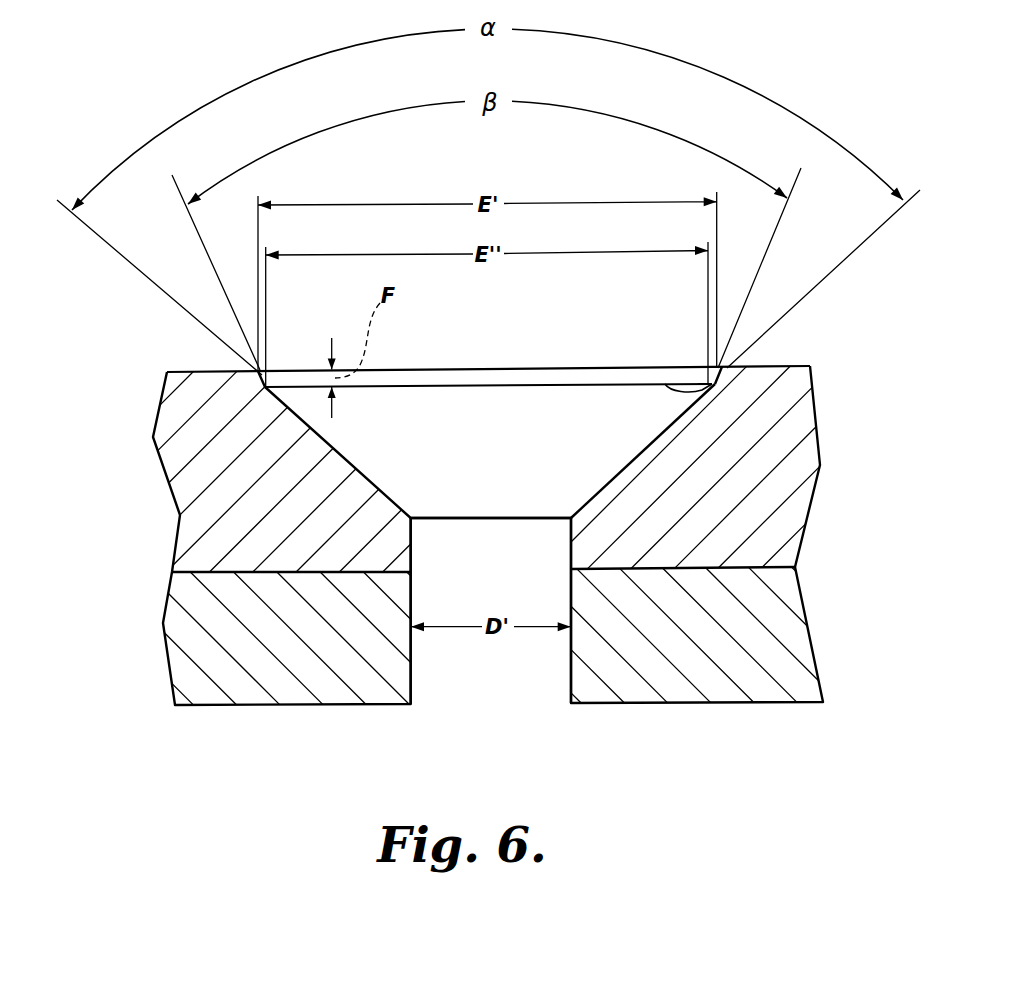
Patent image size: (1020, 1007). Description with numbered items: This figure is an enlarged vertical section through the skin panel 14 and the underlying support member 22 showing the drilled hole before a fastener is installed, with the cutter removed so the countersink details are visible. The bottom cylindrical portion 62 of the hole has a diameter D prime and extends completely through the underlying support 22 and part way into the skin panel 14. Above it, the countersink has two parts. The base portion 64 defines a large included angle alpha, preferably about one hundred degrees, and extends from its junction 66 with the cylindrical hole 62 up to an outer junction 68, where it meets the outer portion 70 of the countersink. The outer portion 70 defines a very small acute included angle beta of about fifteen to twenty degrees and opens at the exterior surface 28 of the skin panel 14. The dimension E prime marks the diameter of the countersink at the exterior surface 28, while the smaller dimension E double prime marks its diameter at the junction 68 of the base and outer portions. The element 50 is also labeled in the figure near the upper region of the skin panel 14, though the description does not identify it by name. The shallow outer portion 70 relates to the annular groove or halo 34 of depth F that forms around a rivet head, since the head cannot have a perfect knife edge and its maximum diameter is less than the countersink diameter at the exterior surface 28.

The skin panel 14 is at (777, 483).
The support member 22 is at (800, 657).
The exterior surface 28 is at (797, 367).
The annular groove or halo 34 is at (721, 366).
The plate / recess surface 50 is at (582, 367).
The bottom cylindrical portion 62 is at (570, 667).
The base portion 64 is at (638, 452).
The junction 66 is at (571, 518).
The outer junction 68 is at (665, 384).
The outer portion 70 is at (708, 384).